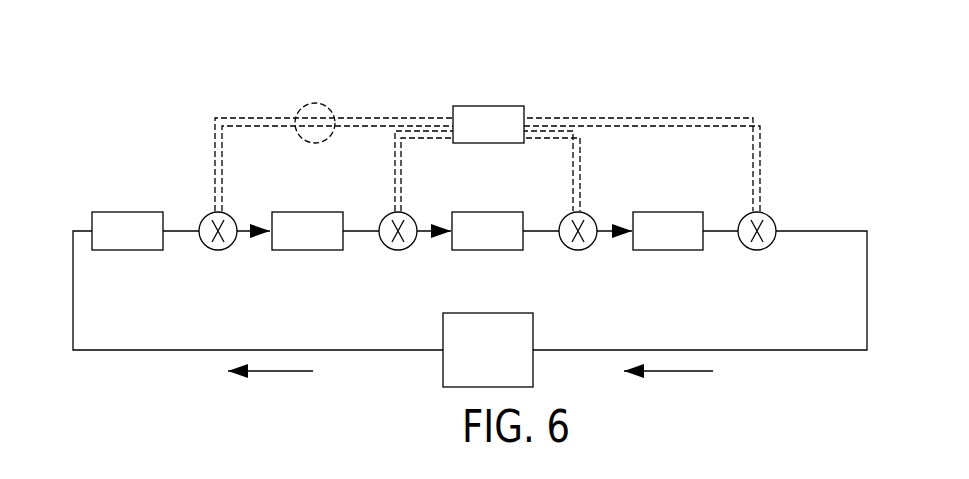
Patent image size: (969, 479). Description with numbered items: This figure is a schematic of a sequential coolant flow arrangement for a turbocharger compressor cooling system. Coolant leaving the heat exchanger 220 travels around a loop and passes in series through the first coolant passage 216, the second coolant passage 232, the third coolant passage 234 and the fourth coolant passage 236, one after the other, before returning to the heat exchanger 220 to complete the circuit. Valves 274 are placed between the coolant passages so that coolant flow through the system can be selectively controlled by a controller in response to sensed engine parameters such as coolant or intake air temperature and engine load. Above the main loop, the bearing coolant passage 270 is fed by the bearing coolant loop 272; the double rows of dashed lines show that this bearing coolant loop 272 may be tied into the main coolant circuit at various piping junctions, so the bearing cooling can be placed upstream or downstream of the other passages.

The first coolant passage 216 is at (155, 226).
The heat exchanger 220 is at (465, 325).
The second coolant passage 232 is at (334, 226).
The third coolant passage 234 is at (513, 227).
The fourth coolant passage 236 is at (690, 226).
The bearing coolant passage 270 is at (509, 120).
The bearing coolant loop 272 is at (310, 103).
The valve 274 is at (229, 212).